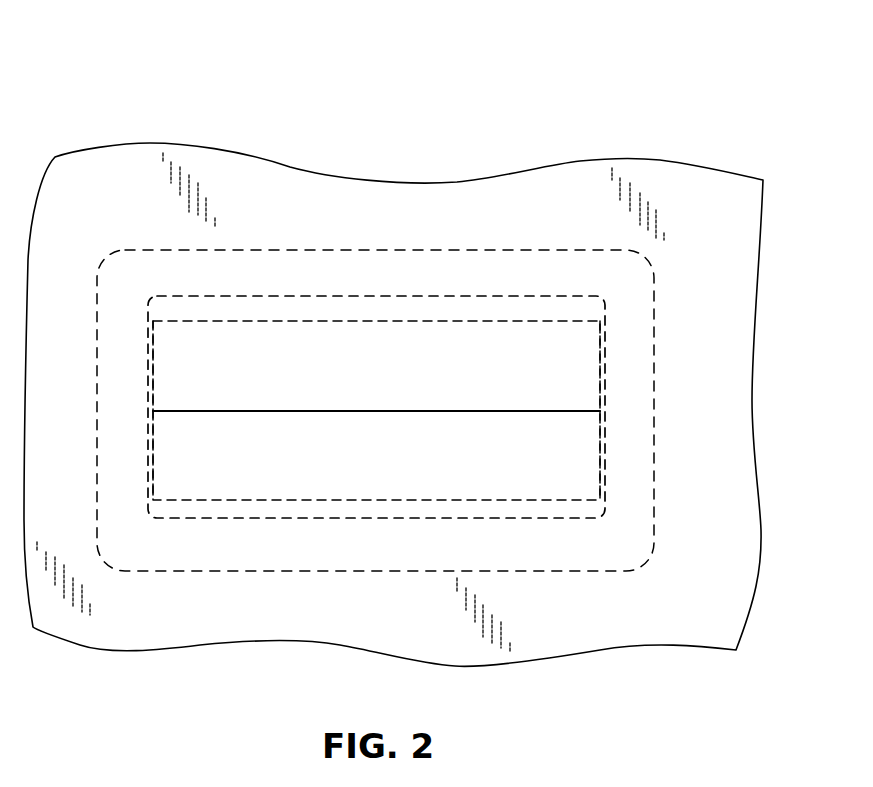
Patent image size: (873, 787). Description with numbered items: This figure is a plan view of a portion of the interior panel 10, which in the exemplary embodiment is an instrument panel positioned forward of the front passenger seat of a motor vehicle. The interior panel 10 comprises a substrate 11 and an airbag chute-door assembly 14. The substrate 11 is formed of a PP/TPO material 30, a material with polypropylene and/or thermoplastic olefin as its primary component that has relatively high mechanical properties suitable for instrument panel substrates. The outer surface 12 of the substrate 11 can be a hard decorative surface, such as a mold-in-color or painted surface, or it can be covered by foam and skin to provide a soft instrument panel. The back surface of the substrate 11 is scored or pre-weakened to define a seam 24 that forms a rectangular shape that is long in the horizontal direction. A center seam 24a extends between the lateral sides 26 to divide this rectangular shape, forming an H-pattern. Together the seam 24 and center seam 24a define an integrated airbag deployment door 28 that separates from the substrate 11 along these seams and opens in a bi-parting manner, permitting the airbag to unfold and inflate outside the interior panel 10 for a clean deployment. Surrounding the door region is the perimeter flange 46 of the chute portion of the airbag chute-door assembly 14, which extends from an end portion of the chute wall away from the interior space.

The interior panel 10 is at (118, 60).
The PP/TPO material 30 is at (745, 267).
The substrate 11 is at (738, 367).
The outer surface 12 is at (723, 523).
The perimeter flange 46 is at (352, 270).
The airbag chute-door assembly 14 is at (480, 245).
The seam 24 is at (197, 320).
The lateral sides 26 is at (155, 368).
The center seam 24a is at (315, 410).
The integrated airbag deployment door 28 is at (398, 469).